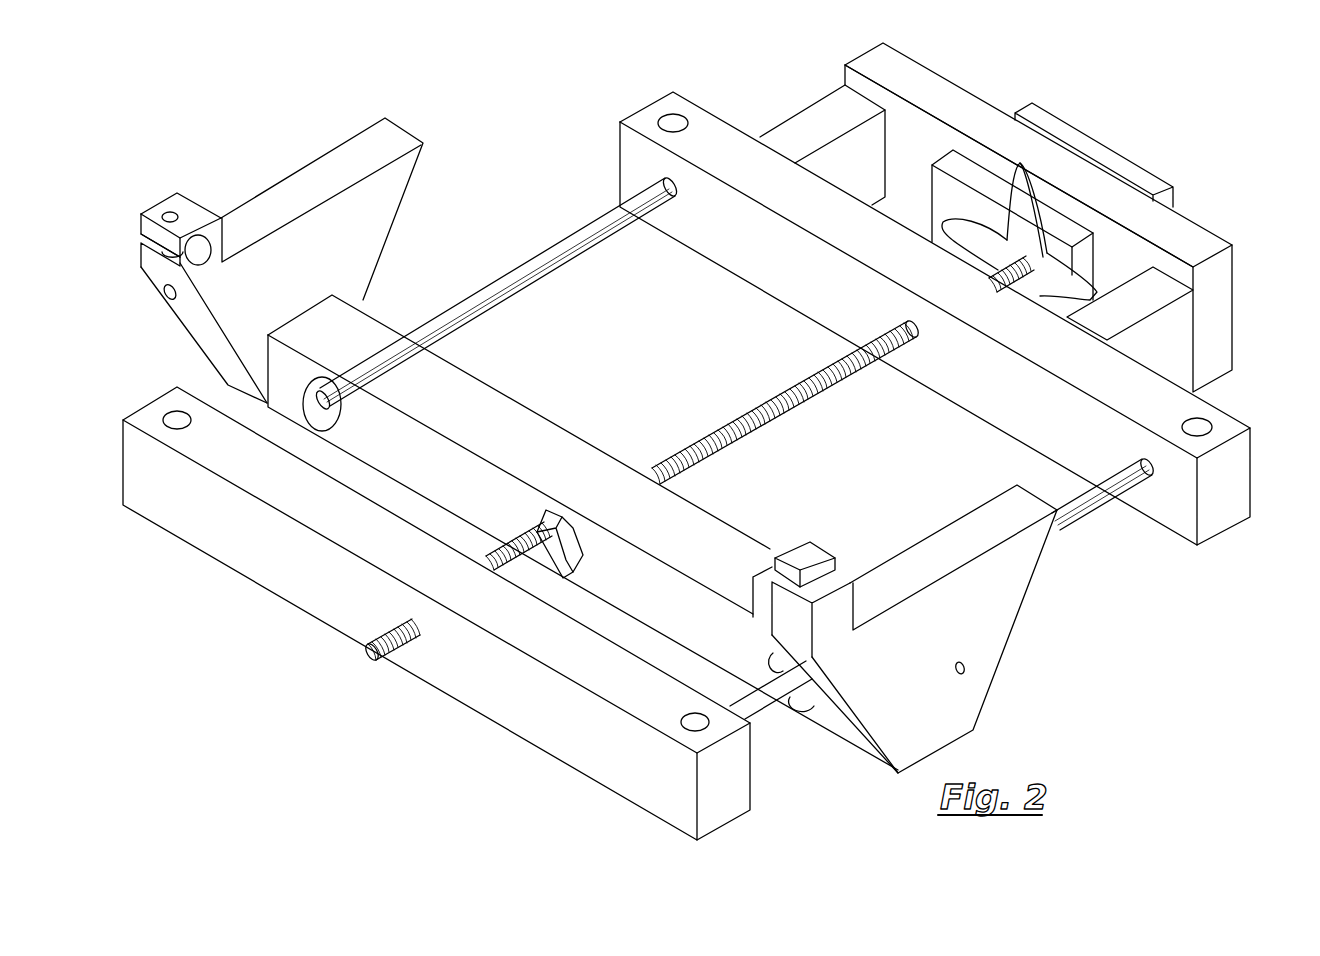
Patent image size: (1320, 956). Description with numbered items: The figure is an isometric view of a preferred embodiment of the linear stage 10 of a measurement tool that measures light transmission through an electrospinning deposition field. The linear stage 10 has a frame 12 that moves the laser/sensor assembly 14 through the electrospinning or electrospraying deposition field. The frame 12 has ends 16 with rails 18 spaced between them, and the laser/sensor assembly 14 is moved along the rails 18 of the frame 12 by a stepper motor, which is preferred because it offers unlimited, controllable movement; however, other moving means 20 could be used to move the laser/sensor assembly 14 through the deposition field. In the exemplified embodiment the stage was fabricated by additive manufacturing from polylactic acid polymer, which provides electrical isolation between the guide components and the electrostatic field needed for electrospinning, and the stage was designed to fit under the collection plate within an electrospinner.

The linear stage 10 is at (1207, 410).
The frame 12 is at (697, 133).
The laser/sensor assembly 14 is at (180, 210).
The ends 16 is at (259, 548).
The rails 18 is at (1075, 515).
The moving means 20 is at (1165, 228).